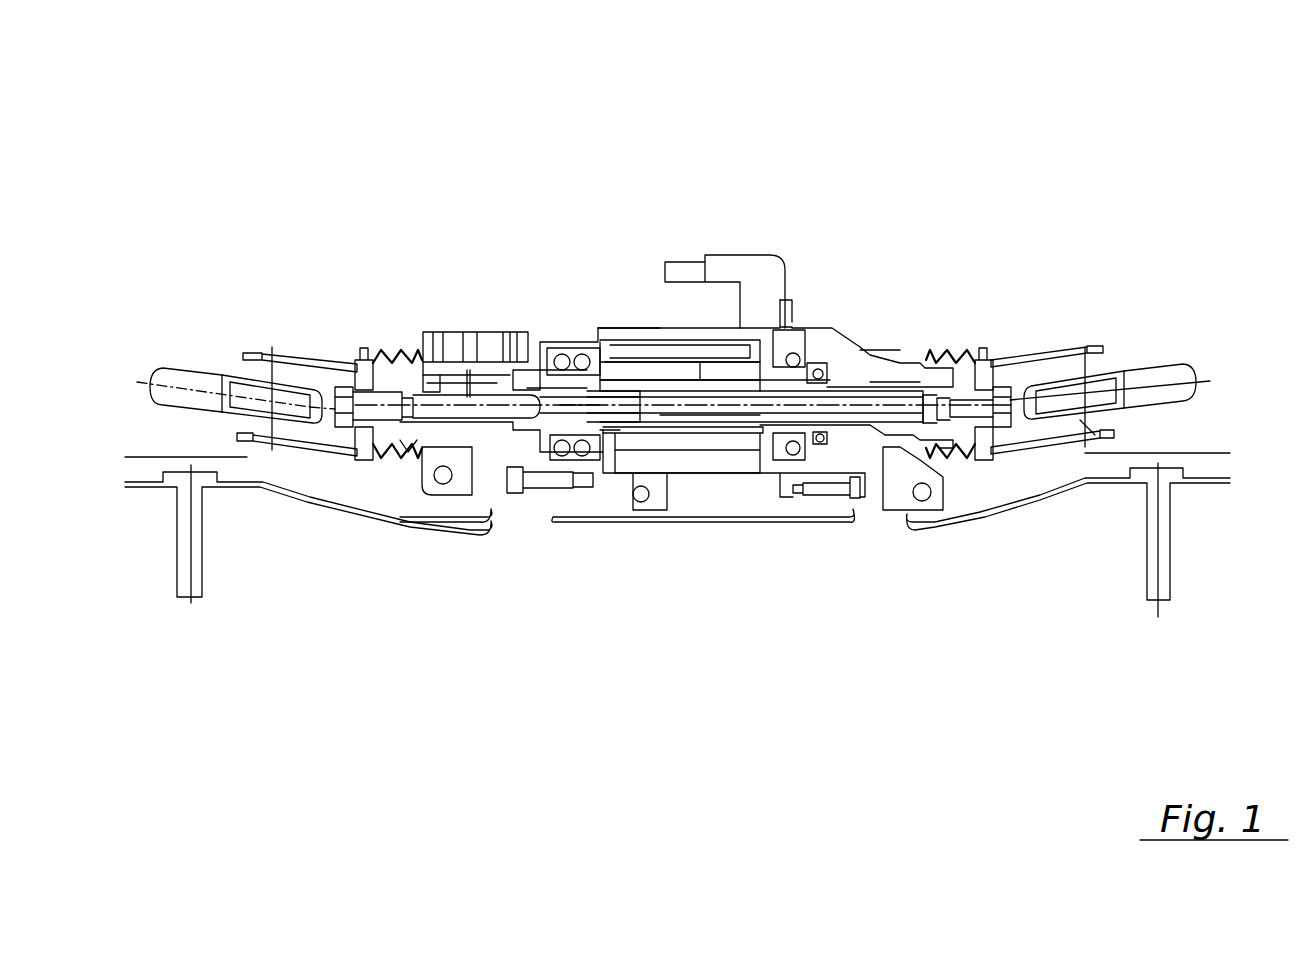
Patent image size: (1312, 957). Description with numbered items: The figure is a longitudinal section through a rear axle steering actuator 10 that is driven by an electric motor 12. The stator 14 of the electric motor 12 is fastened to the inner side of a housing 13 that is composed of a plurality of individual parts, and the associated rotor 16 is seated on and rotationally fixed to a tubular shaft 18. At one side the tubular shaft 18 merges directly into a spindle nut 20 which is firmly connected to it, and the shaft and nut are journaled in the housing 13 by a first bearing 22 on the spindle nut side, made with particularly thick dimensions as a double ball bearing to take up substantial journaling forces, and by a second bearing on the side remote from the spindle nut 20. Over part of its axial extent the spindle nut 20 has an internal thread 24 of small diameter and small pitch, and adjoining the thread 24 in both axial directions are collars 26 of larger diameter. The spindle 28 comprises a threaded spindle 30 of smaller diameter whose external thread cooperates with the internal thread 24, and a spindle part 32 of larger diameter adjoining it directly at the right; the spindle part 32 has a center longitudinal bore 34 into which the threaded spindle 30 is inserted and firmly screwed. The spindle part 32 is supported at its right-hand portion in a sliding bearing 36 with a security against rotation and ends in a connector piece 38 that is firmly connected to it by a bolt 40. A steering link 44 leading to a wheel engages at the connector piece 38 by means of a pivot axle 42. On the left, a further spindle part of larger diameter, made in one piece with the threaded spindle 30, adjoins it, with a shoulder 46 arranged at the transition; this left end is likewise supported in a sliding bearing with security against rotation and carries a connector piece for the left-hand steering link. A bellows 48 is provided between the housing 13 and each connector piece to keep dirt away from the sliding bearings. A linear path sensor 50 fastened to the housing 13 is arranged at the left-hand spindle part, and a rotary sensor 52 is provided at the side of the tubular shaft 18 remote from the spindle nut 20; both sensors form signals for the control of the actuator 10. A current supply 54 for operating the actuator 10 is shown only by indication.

The rear axle steering actuator 10 is at (845, 322).
The electric motor 12 is at (663, 318).
The housing 13 is at (617, 323).
The stator 14 is at (722, 347).
The rotor 16 is at (722, 373).
The tubular shaft 18 is at (793, 360).
The spindle nut 20 is at (593, 423).
The first bearing 22 is at (582, 362).
The internal thread 24 is at (587, 390).
The collar 26 is at (528, 383).
The spindle 28 is at (472, 423).
The threaded spindle 30 is at (580, 405).
The spindle part 32 is at (765, 422).
The center longitudinal bore 34 is at (700, 415).
The sliding bearing 36 is at (983, 377).
The connector piece 38 is at (1040, 357).
The bolt 40 is at (1003, 410).
The pivot axle 42 is at (1085, 428).
The steering link 44 is at (1165, 373).
The shoulder 46 is at (483, 437).
The bellows 48 is at (979, 365).
The linear path sensor 50 is at (485, 347).
The rotary sensor 52 is at (868, 350).
The current supply 54 is at (718, 268).